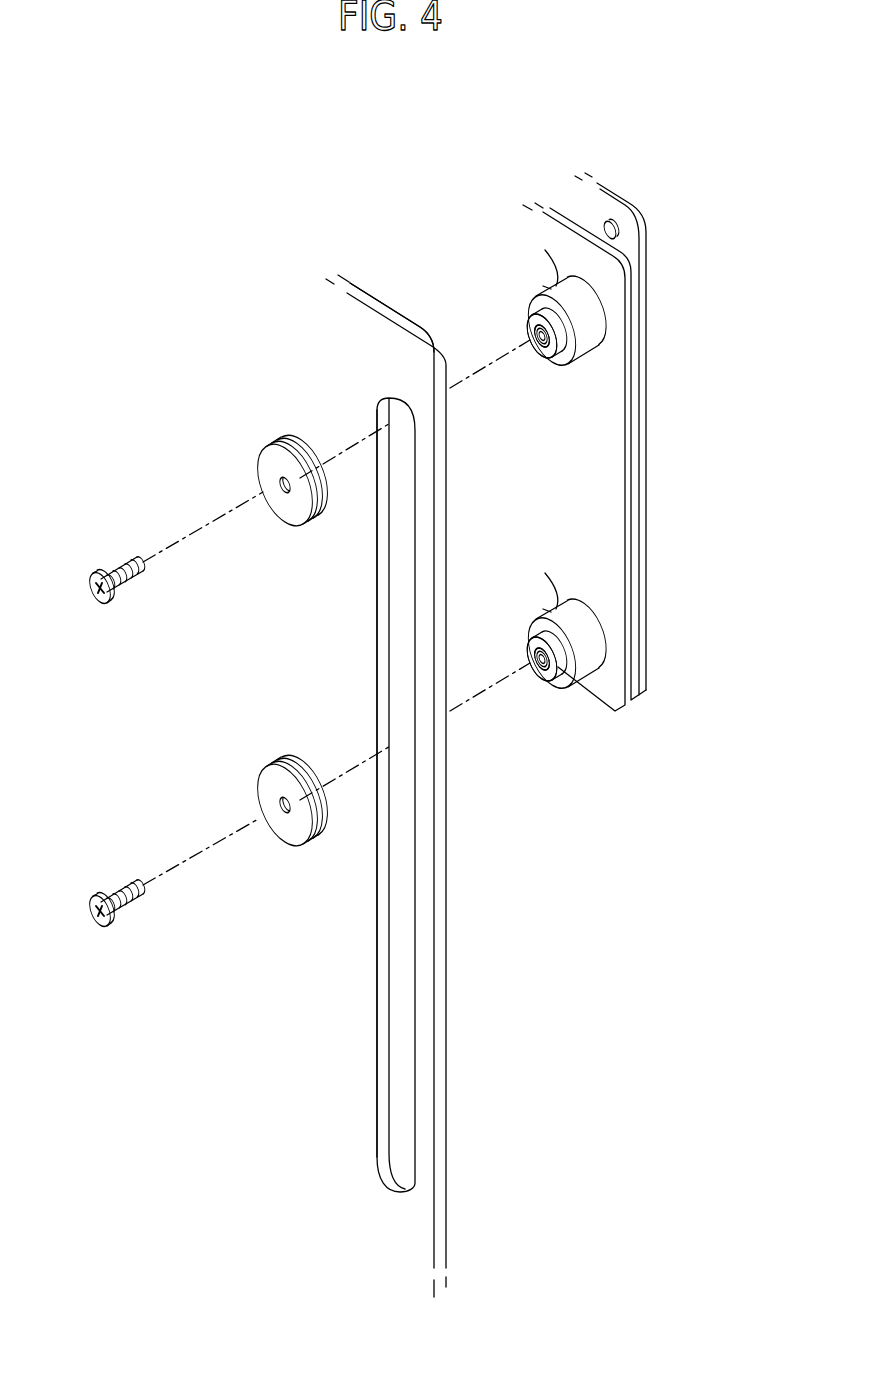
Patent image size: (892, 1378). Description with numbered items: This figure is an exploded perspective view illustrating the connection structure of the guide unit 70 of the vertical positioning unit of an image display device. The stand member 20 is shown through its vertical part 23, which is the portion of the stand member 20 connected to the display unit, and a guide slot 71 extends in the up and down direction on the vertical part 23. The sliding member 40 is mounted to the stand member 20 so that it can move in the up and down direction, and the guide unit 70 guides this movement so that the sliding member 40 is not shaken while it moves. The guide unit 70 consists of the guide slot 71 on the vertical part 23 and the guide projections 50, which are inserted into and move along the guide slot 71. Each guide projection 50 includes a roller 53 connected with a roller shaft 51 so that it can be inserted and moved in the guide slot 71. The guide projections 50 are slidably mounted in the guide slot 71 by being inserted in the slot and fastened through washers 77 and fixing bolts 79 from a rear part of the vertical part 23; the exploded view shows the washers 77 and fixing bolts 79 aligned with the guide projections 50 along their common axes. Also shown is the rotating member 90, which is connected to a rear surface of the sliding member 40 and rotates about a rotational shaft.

The stand member 20 is at (470, 965).
The vertical part 23 is at (393, 340).
The sliding member 40 is at (607, 503).
The guide projection 50 is at (622, 330).
The roller shaft 51 is at (537, 337).
The roller 53 is at (558, 348).
The guide unit 70 is at (470, 190).
The guide slot 71 is at (386, 1040).
The washer 77 is at (263, 455).
The fixing bolt 79 is at (102, 574).
The rotating member 90 is at (642, 250).